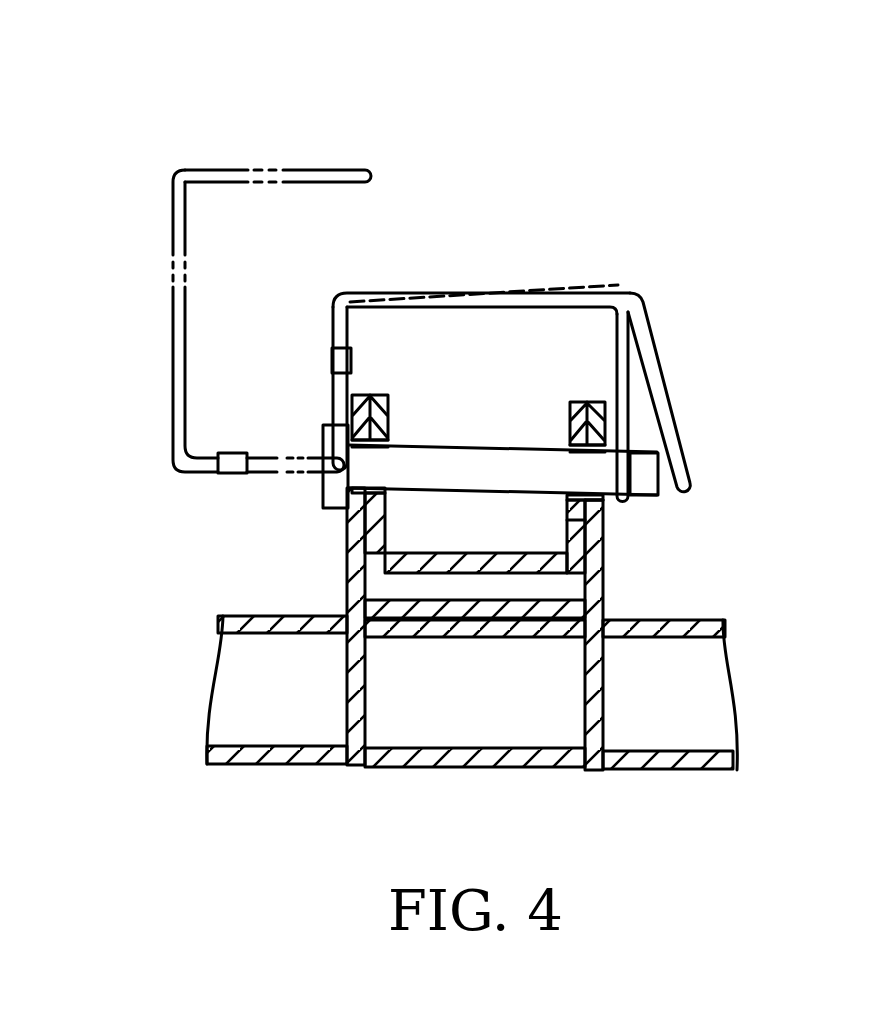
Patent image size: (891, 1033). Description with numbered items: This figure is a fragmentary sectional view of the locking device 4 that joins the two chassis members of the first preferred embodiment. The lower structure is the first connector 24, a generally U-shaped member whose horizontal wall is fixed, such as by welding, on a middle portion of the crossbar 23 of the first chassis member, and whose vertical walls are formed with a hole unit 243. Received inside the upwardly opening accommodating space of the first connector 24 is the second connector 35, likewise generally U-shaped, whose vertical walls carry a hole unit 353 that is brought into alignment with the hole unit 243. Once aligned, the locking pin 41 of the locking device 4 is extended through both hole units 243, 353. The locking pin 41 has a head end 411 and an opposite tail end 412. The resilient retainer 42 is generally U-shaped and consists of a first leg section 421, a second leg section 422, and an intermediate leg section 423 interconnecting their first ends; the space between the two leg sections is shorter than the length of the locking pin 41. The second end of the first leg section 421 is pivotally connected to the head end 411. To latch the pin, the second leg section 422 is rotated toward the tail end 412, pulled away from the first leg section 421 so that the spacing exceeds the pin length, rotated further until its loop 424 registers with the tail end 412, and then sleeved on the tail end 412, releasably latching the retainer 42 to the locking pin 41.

The locking device 4 is at (300, 152).
The locking pin 41 is at (477, 473).
The head end 411 is at (333, 493).
The tail end 412 is at (643, 460).
The resilient retainer 42 is at (175, 306).
The first leg section 421 is at (337, 333).
The second leg section 422 is at (630, 367).
The intermediate leg section 423 is at (410, 297).
The loop 424 is at (687, 482).
The crossbar 23 is at (275, 718).
The first connector 24 is at (350, 577).
The hole unit 243 is at (605, 503).
The second connector 35 is at (377, 530).
The hole unit 353 is at (603, 522).